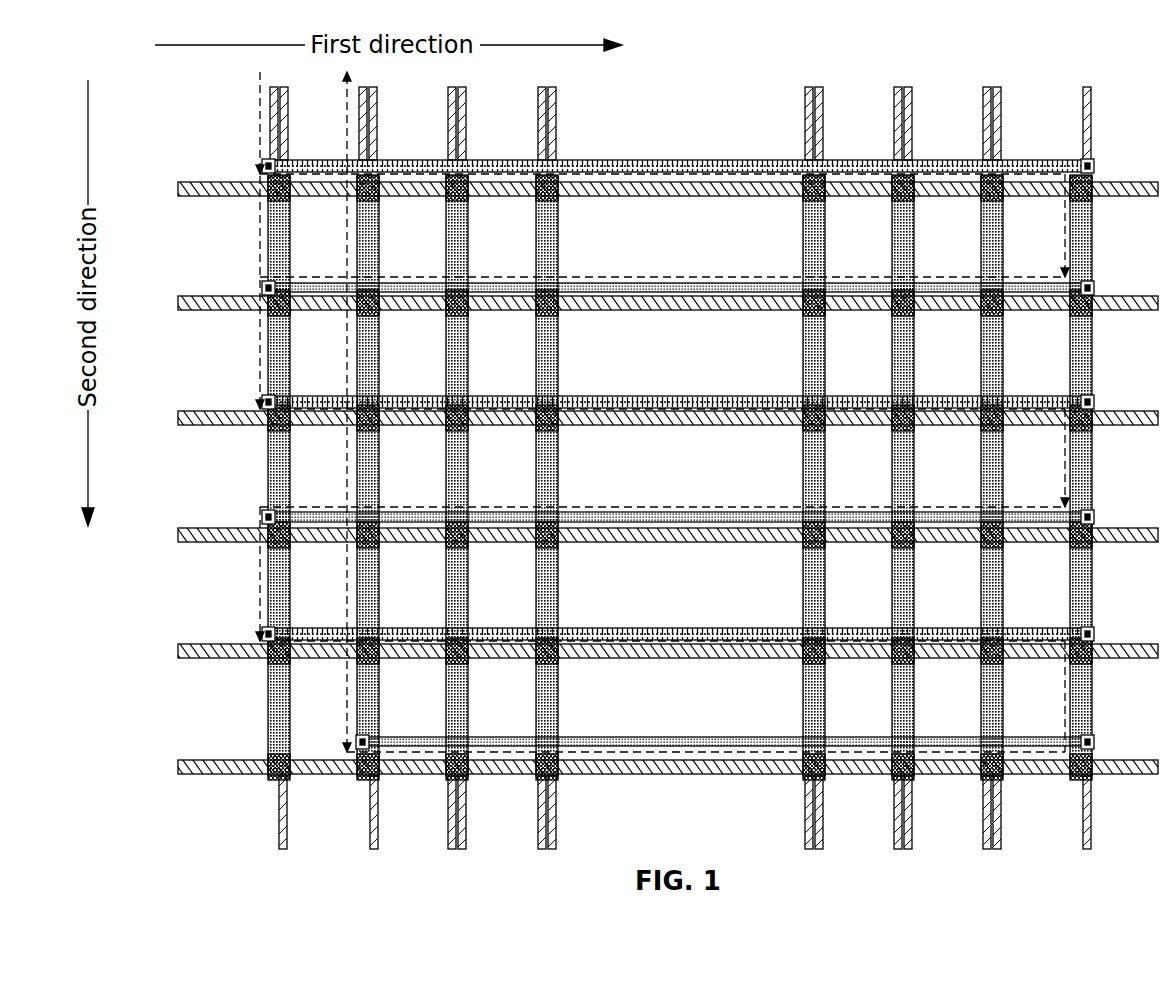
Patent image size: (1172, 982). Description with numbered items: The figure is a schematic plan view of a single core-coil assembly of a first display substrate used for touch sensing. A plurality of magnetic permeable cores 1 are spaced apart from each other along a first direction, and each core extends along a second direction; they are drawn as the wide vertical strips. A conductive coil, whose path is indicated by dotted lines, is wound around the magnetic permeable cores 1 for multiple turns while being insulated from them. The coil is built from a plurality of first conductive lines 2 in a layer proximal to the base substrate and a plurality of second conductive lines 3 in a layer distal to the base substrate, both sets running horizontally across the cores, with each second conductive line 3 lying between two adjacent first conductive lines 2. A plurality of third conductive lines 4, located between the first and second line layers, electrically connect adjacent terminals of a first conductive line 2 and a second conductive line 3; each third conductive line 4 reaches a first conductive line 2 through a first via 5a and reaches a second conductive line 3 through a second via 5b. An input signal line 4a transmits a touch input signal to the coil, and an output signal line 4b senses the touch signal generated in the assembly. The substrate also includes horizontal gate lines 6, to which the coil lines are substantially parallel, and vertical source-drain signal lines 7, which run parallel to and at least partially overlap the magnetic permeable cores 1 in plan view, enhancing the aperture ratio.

The magnetic permeable cores 1 is at (268, 474).
The first conductive lines 2 is at (696, 159).
The second conductive lines 3 is at (700, 282).
The third conductive lines 4 is at (1092, 228).
The input signal line 4a is at (268, 130).
The output signal line 4b is at (358, 125).
The first via 5a is at (262, 165).
The second via 5b is at (262, 285).
The gate lines 6 is at (705, 197).
The source-drain signal lines 7 is at (288, 97).